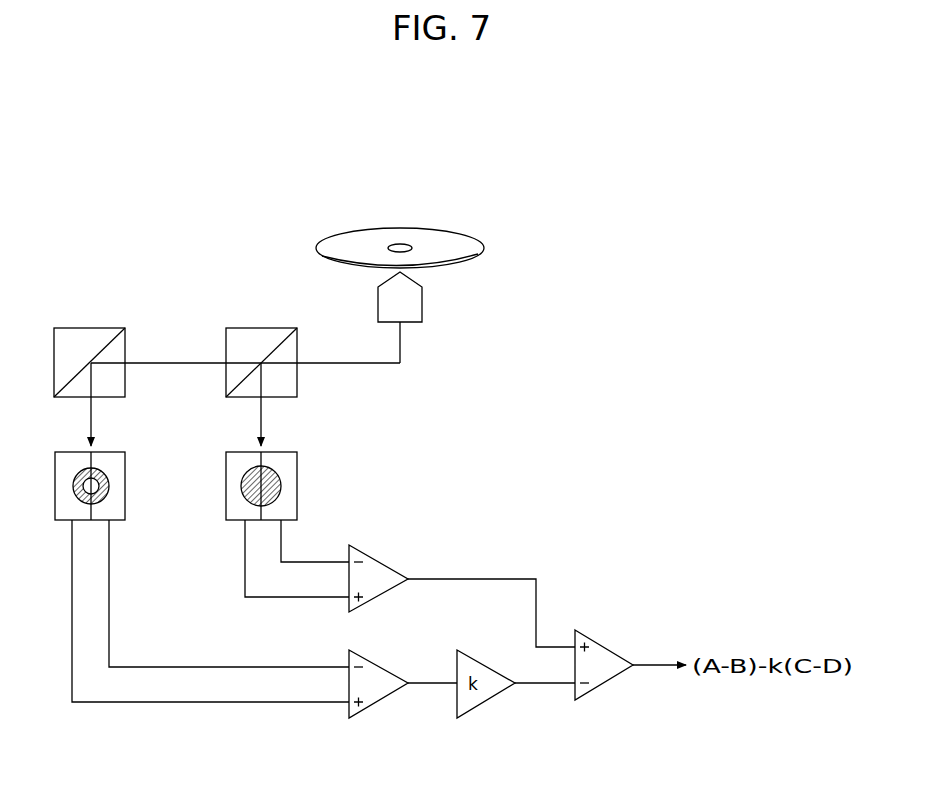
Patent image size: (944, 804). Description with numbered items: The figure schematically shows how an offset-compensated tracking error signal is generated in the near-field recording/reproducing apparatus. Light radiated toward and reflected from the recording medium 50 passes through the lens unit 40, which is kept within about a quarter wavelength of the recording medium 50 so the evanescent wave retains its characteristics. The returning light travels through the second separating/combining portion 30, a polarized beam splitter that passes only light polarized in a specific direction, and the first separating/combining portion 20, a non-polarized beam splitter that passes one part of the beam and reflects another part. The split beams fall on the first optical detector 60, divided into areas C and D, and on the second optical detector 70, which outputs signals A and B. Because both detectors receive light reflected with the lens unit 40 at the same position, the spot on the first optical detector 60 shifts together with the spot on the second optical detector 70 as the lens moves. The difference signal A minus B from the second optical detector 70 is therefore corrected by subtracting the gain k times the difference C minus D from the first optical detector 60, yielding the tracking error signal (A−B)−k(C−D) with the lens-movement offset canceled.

The first separating/combining portion 20 is at (94, 321).
The second separating/combining portion 30 is at (265, 321).
The lens unit 40 is at (418, 274).
The recording medium 50 is at (474, 237).
The first optical detector 60 is at (138, 478).
The second optical detector 70 is at (311, 478).